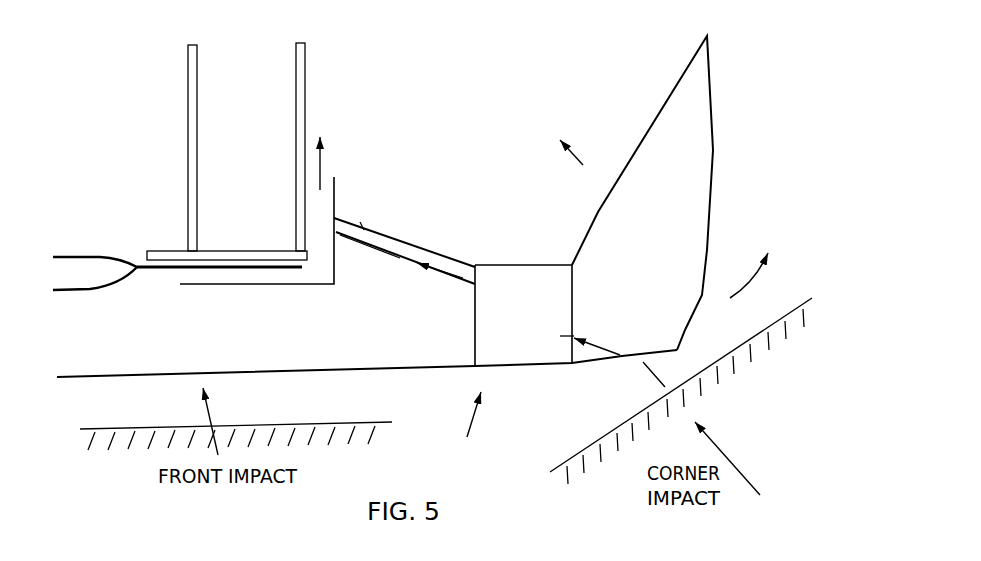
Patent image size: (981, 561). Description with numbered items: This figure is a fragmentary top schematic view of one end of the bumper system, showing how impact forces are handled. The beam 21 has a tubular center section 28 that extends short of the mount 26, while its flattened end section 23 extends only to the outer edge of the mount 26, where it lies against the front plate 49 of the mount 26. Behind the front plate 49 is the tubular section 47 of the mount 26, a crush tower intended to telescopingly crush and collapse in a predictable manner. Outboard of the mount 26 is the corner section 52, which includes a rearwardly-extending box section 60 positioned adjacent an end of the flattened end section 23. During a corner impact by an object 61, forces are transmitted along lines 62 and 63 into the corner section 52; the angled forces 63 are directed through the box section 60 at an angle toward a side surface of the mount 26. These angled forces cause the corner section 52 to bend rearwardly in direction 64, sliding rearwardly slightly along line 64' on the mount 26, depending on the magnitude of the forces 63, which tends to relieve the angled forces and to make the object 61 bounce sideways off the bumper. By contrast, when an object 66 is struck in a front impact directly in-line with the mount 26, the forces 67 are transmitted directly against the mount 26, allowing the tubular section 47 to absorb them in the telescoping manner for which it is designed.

The beam 21 is at (103, 255).
The tubular center section 28 is at (90, 292).
The flattened end section 23 is at (145, 272).
The front plate 49 is at (165, 250).
The tubular section 47 is at (188, 88).
The mount 26 is at (310, 86).
The line of rearward sliding 64' is at (350, 163).
The box section 60 is at (375, 245).
The angled forces 63 is at (458, 283).
The direction of rearward bending 64 is at (636, 193).
The corner section 52 is at (462, 428).
The object 66 is at (352, 422).
The forces 67 is at (208, 415).
The object 61 is at (602, 432).
The lines of force 62 is at (658, 382).